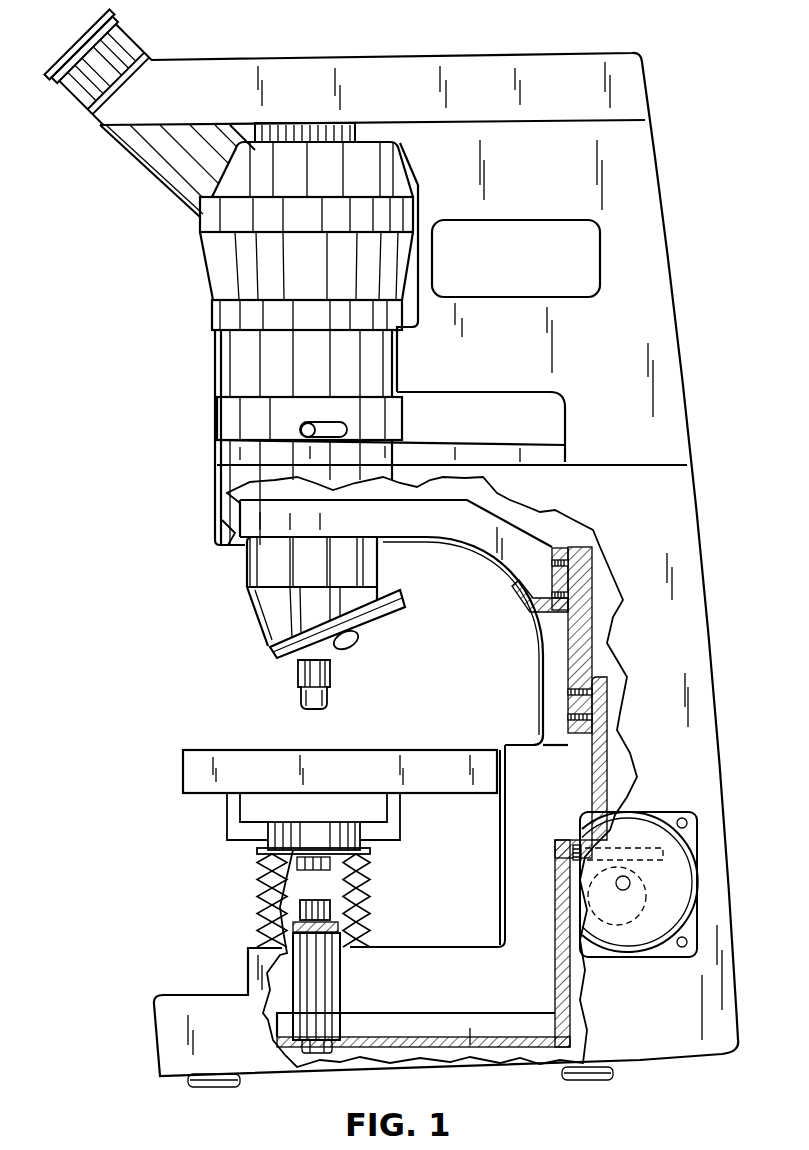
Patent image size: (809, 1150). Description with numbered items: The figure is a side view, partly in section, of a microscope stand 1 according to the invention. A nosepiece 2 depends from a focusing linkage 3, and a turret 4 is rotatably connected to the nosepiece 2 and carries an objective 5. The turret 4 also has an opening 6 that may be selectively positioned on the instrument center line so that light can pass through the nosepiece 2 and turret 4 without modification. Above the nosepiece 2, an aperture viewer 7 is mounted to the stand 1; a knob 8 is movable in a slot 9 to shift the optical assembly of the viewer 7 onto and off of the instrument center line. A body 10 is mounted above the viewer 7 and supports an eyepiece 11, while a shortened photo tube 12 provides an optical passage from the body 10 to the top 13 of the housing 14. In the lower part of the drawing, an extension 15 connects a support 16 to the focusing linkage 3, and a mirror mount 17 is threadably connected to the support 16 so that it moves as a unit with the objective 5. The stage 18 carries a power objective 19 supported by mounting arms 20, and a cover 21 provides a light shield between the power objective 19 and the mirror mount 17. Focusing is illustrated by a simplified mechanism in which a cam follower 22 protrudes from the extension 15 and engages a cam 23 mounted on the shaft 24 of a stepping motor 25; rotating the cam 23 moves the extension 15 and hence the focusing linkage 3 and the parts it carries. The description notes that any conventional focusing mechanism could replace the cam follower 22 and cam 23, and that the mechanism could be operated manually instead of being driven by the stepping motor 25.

The microscope stand 1 is at (698, 628).
The nosepiece 2 is at (253, 603).
The focusing linkage 3 is at (568, 655).
The turret 4 is at (388, 622).
The objective 5 is at (330, 682).
The opening 6 is at (352, 645).
The aperture viewer 7 is at (218, 437).
The knob 8 is at (303, 428).
The slot 9 is at (341, 428).
The body 10 is at (225, 260).
The eyepiece 11 is at (123, 30).
The shortened photo tube 12 is at (302, 128).
The top 13 is at (517, 62).
The housing 14 is at (643, 152).
The extension 15 is at (607, 747).
The support 16 is at (340, 987).
The mirror mount 17 is at (322, 895).
The stage 18 is at (183, 767).
The power objective 19 is at (312, 872).
The mounting arms 20 is at (227, 817).
The cover 21 is at (365, 868).
The cam follower 22 is at (578, 862).
The cam 23 is at (648, 892).
The shaft 24 is at (623, 890).
The stepping motor 25 is at (650, 832).